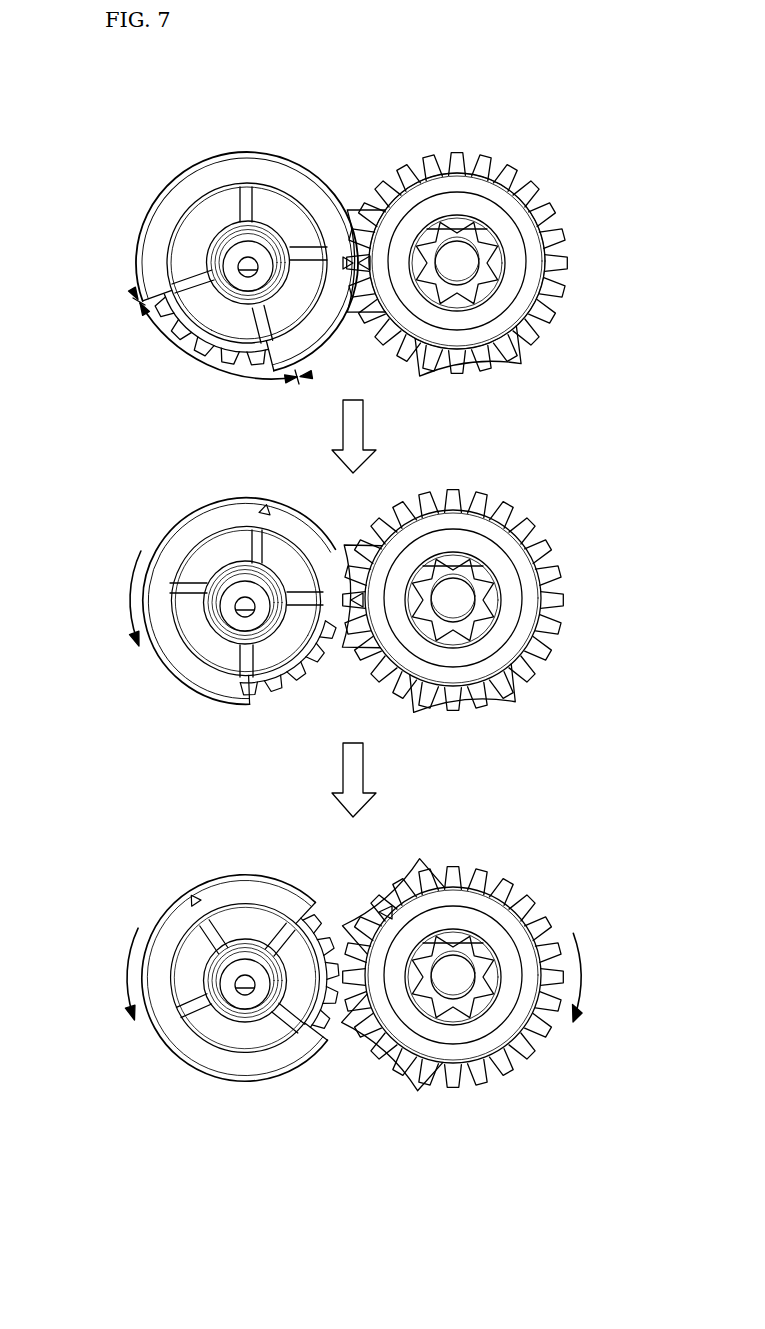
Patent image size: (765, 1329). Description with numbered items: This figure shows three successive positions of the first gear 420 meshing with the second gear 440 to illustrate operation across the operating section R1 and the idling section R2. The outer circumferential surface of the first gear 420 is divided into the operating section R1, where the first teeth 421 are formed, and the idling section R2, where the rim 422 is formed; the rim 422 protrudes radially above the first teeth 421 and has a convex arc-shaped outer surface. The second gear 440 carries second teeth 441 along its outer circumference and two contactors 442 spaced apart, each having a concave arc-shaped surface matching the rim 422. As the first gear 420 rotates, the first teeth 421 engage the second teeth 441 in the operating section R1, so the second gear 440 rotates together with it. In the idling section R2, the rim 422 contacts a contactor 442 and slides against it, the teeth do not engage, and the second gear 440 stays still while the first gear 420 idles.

The first gear 420 is at (134, 224).
The first teeth 421 is at (193, 350).
The rim 422 is at (205, 183).
The second gear 440 is at (561, 223).
The second teeth 441 is at (468, 157).
The contactor 442 is at (365, 218).
The operating section R1 is at (170, 347).
The idling section R2 is at (158, 204).